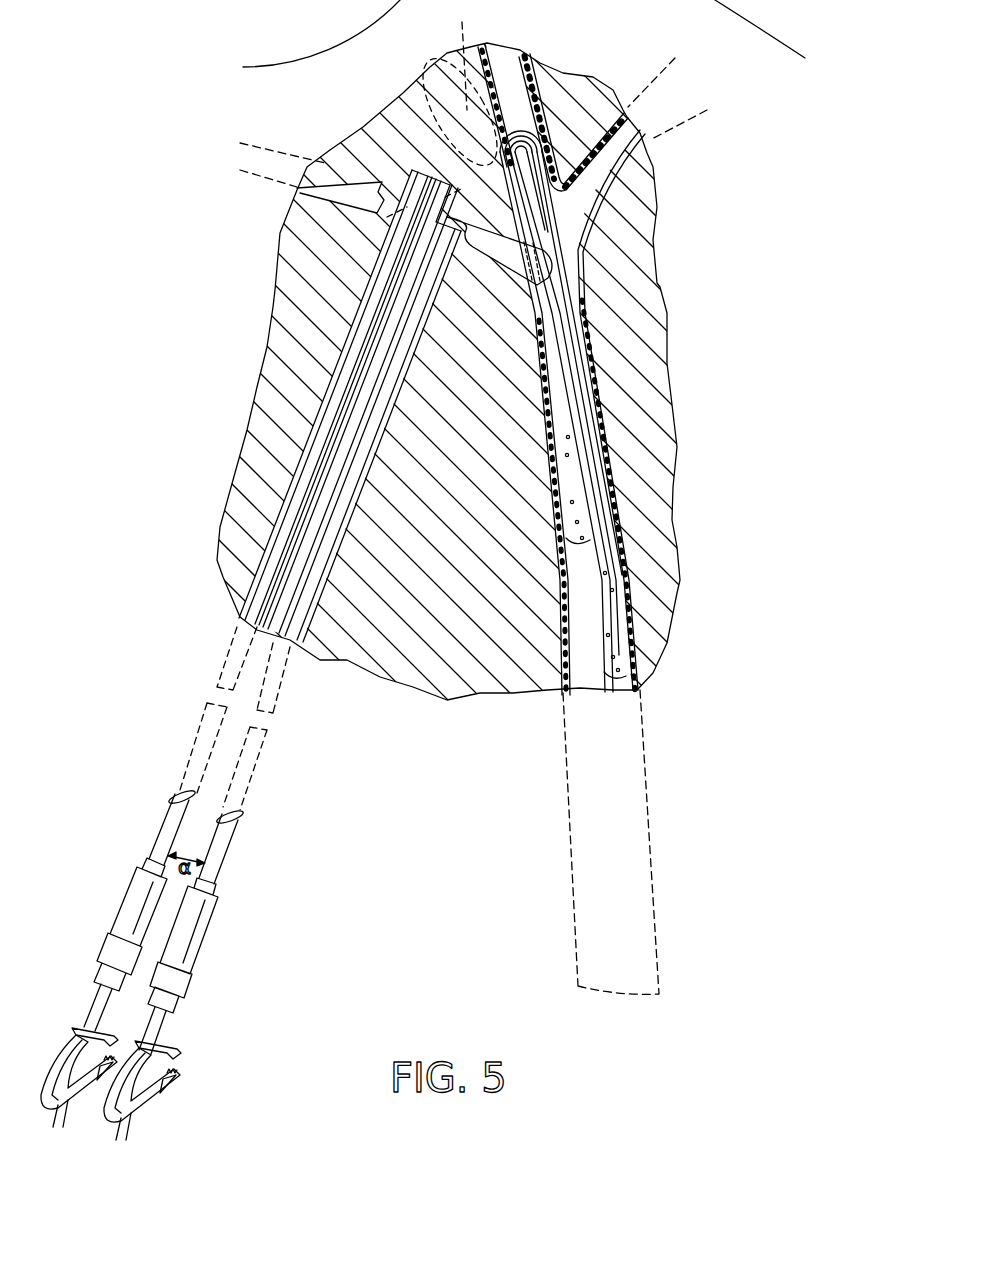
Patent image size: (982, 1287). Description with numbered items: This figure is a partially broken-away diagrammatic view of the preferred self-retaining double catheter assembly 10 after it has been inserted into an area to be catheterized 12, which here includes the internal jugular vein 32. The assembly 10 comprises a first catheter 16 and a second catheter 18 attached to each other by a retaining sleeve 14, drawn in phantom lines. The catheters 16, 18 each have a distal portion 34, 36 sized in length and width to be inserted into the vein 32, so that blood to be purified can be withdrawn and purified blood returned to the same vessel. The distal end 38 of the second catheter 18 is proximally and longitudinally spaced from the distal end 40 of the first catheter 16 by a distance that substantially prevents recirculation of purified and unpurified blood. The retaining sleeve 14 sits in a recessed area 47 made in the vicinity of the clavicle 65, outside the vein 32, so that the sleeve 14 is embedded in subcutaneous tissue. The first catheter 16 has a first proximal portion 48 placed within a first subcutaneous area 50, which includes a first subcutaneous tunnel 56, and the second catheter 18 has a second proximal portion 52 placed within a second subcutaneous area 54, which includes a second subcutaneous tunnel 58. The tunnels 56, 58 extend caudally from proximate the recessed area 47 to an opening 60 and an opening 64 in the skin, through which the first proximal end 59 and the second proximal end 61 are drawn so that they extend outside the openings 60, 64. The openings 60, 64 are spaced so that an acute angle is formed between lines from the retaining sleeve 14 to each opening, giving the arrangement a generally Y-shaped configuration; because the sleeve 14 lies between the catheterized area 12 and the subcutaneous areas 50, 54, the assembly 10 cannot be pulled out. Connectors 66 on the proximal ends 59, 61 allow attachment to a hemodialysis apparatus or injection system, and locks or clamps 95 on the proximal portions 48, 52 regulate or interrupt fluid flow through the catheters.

The self-retaining double catheter assembly 10 is at (507, 133).
The area to be catheterized 12 is at (657, 160).
The retaining sleeve 14 is at (442, 110).
The first catheter 16 is at (545, 208).
The second catheter 18 is at (552, 317).
The internal jugular vein 32 is at (546, 130).
The distal portion of the first catheter 34 is at (587, 423).
The distal portion of the second catheter 36 is at (563, 367).
The distal end of the second catheter 38 is at (586, 540).
The distal end of the first catheter 40 is at (618, 690).
The recessed area 47 is at (463, 30).
The first proximal portion 48 is at (313, 457).
The first subcutaneous area 50 is at (270, 530).
The second proximal portion 52 is at (333, 500).
The second subcutaneous area 54 is at (312, 621).
The first subcutaneous tunnel 56 is at (337, 367).
The second subcutaneous tunnel 58 is at (350, 420).
The first proximal end 59 is at (145, 862).
The opening 60 is at (168, 797).
The second proximal end 61 is at (214, 880).
The opening 64 is at (240, 818).
The clavicle 65 is at (338, 180).
The connectors 66 is at (158, 1017).
The locks or clamps 95 is at (74, 1028).